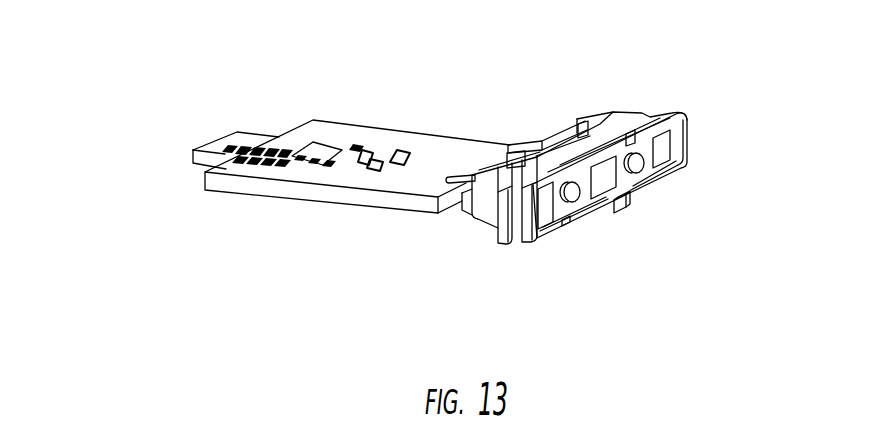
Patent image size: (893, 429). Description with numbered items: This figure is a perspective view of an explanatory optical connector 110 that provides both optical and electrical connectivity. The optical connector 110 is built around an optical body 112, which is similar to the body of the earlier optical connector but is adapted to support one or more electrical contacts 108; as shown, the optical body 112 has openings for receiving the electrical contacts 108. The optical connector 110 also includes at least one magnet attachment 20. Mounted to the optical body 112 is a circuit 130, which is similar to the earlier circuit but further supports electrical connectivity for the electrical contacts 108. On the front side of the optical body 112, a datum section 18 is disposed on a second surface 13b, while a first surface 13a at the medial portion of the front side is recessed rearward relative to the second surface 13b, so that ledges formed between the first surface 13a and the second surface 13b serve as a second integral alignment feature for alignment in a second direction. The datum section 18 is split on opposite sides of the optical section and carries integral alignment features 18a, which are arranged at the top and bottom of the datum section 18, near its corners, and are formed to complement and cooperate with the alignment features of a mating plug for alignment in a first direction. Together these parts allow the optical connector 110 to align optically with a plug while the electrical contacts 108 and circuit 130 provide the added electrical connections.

The circuit 130 is at (465, 133).
The magnet attachment 20 is at (583, 122).
The optical body 112 is at (650, 112).
The datum section 18 is at (688, 165).
The integral alignment features 18a is at (672, 110).
The electrical contacts 108 is at (640, 167).
The first surface 13a is at (628, 207).
The second surface 13b is at (567, 220).
The optical connector 110 is at (513, 250).